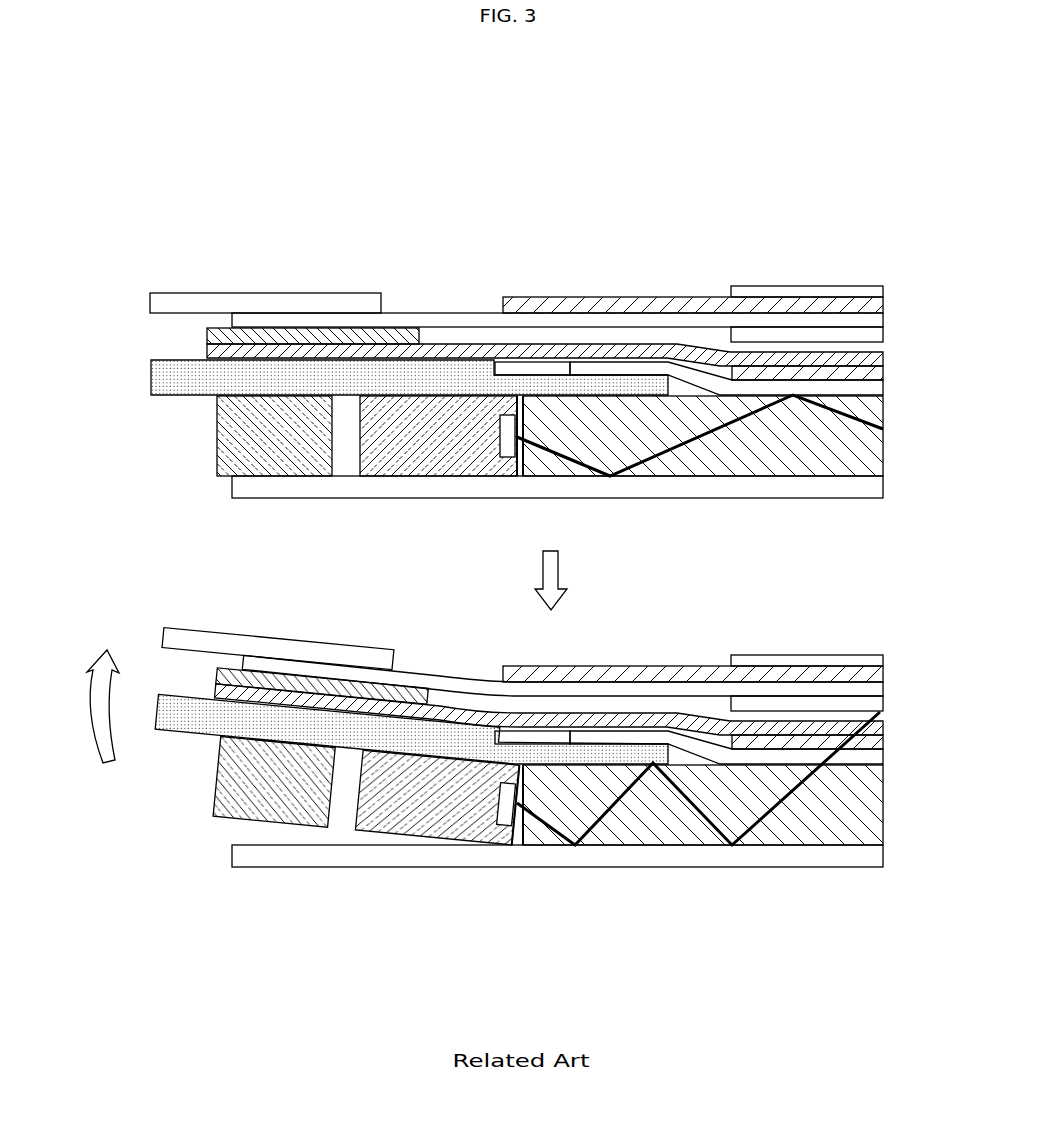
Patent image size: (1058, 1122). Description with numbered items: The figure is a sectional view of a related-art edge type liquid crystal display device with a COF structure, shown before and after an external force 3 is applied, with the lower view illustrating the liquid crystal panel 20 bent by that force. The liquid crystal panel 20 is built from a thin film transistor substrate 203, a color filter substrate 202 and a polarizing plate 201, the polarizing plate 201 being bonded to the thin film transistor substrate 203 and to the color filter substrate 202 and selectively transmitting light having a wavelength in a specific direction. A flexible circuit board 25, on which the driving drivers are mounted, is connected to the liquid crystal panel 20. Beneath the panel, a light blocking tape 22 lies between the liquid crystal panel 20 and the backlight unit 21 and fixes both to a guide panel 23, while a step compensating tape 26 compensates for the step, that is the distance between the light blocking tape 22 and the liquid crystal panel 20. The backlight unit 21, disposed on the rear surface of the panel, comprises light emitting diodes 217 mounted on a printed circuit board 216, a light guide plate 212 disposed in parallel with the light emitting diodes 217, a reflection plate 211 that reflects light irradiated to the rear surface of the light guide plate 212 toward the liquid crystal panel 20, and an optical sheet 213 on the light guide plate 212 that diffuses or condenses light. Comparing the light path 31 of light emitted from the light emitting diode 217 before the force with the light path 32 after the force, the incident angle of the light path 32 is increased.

The external force 3 is at (88, 718).
The liquid crystal panel 20 is at (890, 287).
The backlight unit 21 is at (935, 367).
The light blocking tape 22 is at (207, 353).
The guide panel 23 is at (217, 438).
The flexible circuit board 25 is at (262, 298).
The step compensating tape 26 is at (207, 336).
The light path 31 is at (565, 457).
The light path 32 is at (552, 830).
The polarizing plate 201 is at (820, 335).
The color filter substrate 202 is at (577, 302).
The thin film transistor substrate 203 is at (440, 318).
The reflection plate 211 is at (273, 490).
The light guide plate 212 is at (665, 470).
The optical sheet 213 is at (890, 365).
The printed circuit board 216 is at (151, 377).
The light emitting diode 217 is at (427, 480).